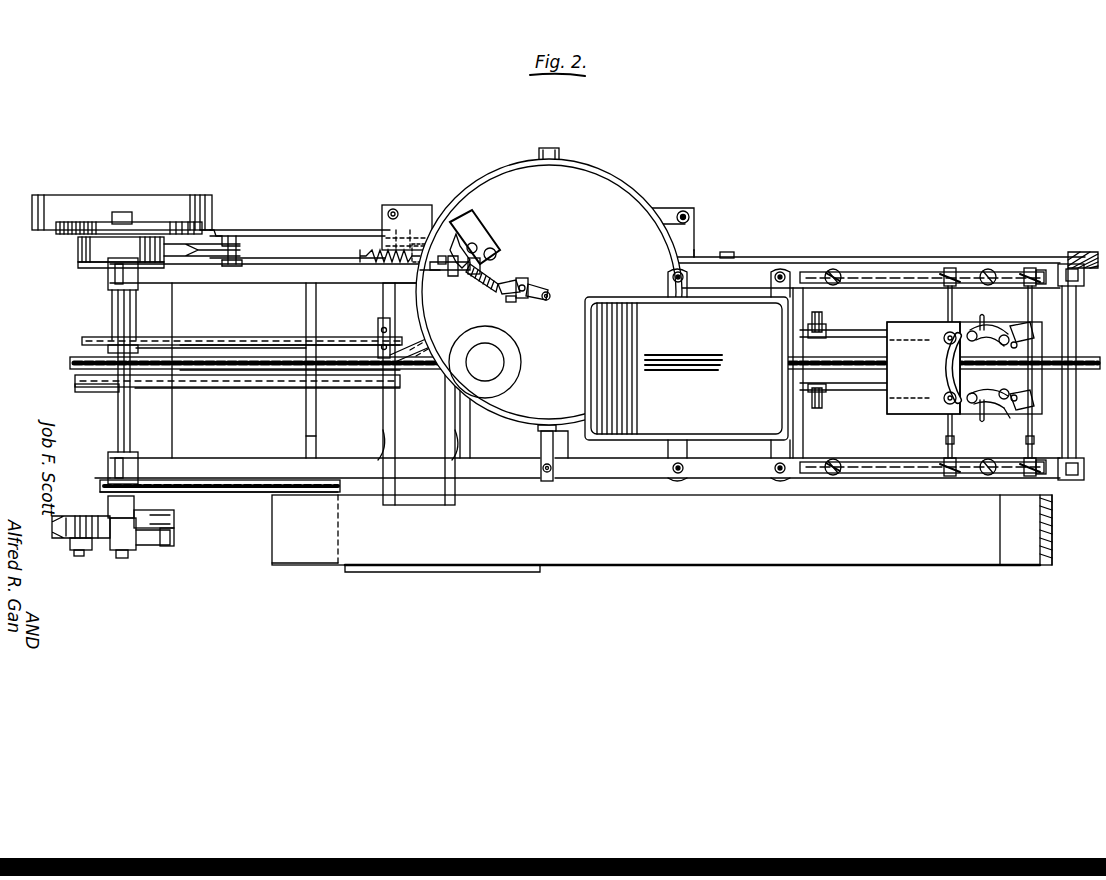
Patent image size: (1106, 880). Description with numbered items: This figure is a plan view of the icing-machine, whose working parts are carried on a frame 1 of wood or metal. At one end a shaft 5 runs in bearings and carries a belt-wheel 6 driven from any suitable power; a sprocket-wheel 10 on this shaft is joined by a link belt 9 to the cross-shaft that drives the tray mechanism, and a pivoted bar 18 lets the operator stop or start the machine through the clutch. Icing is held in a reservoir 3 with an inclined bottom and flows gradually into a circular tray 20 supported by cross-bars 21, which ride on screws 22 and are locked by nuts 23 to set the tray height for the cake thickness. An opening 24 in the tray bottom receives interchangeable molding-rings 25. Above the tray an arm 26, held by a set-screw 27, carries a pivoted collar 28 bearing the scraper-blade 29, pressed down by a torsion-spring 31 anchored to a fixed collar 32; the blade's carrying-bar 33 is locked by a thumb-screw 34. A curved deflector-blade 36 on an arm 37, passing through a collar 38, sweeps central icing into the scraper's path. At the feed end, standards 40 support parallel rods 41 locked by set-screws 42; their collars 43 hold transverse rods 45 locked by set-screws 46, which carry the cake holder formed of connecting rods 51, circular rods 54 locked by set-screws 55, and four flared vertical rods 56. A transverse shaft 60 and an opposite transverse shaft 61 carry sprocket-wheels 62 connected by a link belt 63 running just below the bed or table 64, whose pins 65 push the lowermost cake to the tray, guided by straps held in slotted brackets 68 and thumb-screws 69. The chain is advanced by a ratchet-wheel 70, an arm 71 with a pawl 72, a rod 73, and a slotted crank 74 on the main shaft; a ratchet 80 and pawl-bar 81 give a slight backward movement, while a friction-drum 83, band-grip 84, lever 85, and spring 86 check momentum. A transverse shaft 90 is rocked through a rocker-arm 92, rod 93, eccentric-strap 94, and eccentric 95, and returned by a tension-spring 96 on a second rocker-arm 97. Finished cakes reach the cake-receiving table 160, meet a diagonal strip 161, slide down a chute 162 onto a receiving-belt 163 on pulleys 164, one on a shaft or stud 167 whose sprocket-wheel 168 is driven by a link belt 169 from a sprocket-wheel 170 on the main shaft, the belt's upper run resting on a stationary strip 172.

The frame 1 is at (1048, 478).
The reservoir 3 is at (687, 365).
The shaft 5 is at (126, 196).
The belt-wheel 6 is at (214, 200).
The link belt 9 is at (230, 358).
The sprocket-wheel 10 is at (98, 325).
The pivoted bar 18 is at (316, 258).
The circular tray 20 is at (608, 200).
The cross-bars 21 is at (404, 212).
The screws 22 is at (688, 212).
The nuts 23 is at (690, 217).
The opening 24 is at (518, 345).
The molding-rings 25 is at (512, 370).
The arm 26 is at (436, 272).
The set-screw 27 is at (550, 292).
The collar 28 is at (498, 262).
The scraper-blade 29 is at (452, 228).
The torsion-spring 31 is at (478, 278).
The fixed collar 32 is at (520, 280).
The carrying-bar 33 is at (468, 246).
The thumb-screw 34 is at (492, 252).
The deflector-blade 36 is at (500, 262).
The arm 37 is at (530, 290).
The collar 38 is at (512, 300).
The standards 40 is at (834, 270).
The parallel rods 41 is at (892, 284).
The set-screws 42 is at (840, 275).
The collars 43 is at (948, 268).
The transverse rods 45 is at (950, 442).
The set-screws 46 is at (964, 268).
The rods 51 is at (972, 328).
The circular rods 54 is at (948, 326).
The set-screws 55 is at (938, 344).
The vertical rods 56 is at (1000, 420).
The transverse shaft 60 is at (1072, 296).
The transverse shaft 61 is at (118, 296).
The sprocket-wheels 62 is at (80, 358).
The link belt 63 is at (338, 357).
The bed or table 64 is at (858, 392).
The pins 65 is at (208, 357).
The slotted brackets 68 is at (826, 318).
The thumb-screws 69 is at (814, 326).
The ratchet-wheel 70 is at (90, 512).
The arm 71 is at (146, 548).
The pawl 72 is at (148, 516).
The rod 73 is at (152, 548).
The crank 74 is at (100, 555).
The ratchet 80 is at (60, 236).
The pawl-bar 81 is at (292, 223).
The friction-drum 83 is at (90, 262).
The band-grip 84 is at (80, 252).
The lever 85 is at (205, 252).
The spring 86 is at (232, 262).
The transversely-disposed shaft 90 is at (420, 242).
The rocker-arm 92 is at (428, 236).
The rod 93 is at (272, 388).
The eccentric-strap 94 is at (80, 382).
The eccentric 95 is at (96, 387).
The tension-spring 96 is at (368, 250).
The rocker-arm 97 is at (400, 265).
The cake-receiving table 160 is at (420, 350).
The diagonal strip 161 is at (410, 336).
The chute 162 is at (427, 403).
The receiving-belt 163 is at (428, 541).
The pulleys 164 is at (300, 594).
The shaft or stud 167 is at (312, 445).
The sprocket-wheel 168 is at (284, 482).
The link belt 169 is at (238, 495).
The sprocket-wheel 170 is at (62, 459).
The stationary strip 172 is at (840, 596).